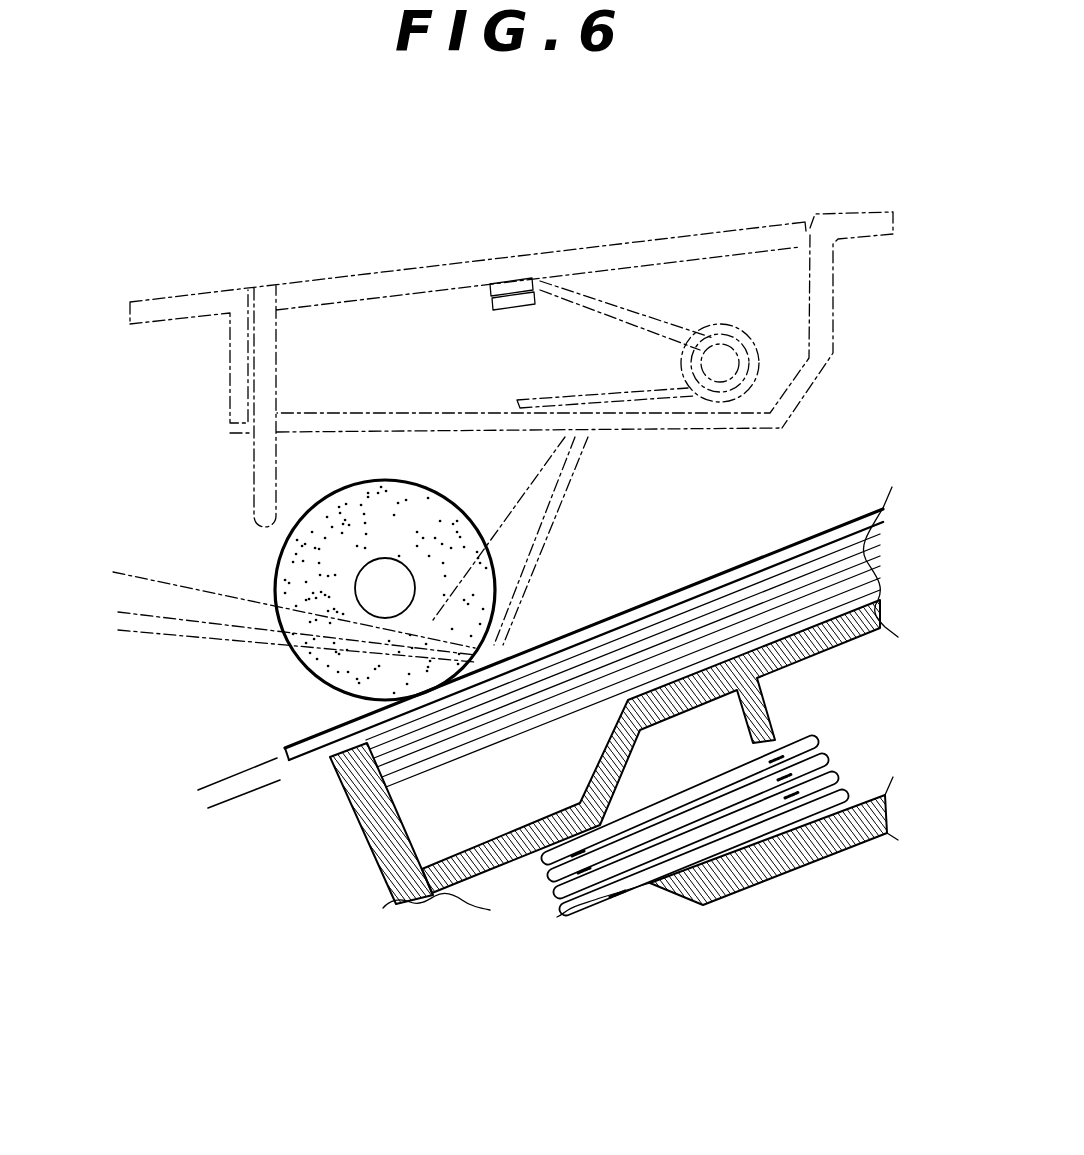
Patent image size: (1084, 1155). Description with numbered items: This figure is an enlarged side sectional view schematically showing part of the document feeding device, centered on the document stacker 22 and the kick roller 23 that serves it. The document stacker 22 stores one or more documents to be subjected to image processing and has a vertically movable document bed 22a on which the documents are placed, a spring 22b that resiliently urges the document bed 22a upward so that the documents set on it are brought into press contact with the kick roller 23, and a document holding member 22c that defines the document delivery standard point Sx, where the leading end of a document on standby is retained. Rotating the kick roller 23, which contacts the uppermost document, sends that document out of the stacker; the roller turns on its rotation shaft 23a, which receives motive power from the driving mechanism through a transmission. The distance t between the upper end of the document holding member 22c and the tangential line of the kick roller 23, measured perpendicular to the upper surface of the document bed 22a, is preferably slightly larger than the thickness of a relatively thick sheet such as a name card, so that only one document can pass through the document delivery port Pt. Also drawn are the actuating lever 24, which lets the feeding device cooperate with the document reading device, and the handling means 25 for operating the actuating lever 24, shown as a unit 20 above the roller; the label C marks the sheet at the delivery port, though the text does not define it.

The thermal head unit 20 is at (381, 256).
The handling means 25 is at (680, 237).
The kick roller 23 is at (310, 547).
The rotation shaft 23a is at (367, 593).
The actuating lever 24 is at (177, 637).
The card (recording medium) C is at (765, 565).
The document delivery port Pt is at (328, 728).
The distance t is at (203, 738).
The document stacker 22 is at (753, 893).
The document bed 22a is at (785, 658).
The spring 22b is at (817, 750).
The document holding member 22c is at (357, 807).
The document delivery standard point Sx is at (440, 913).